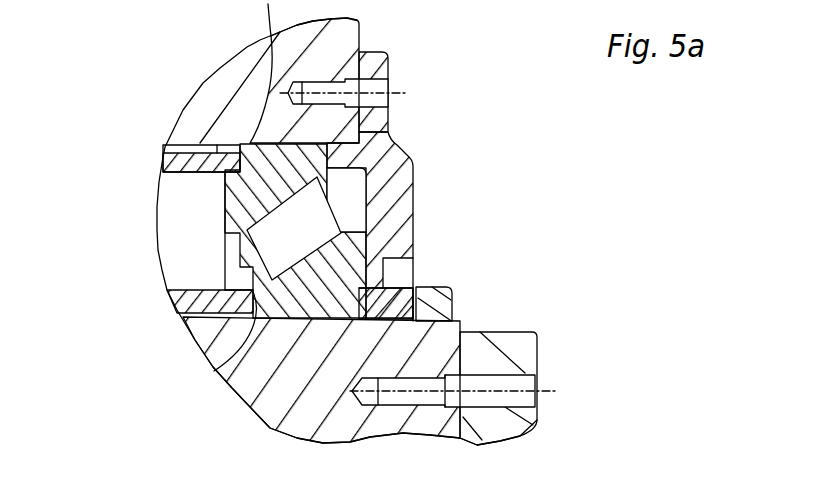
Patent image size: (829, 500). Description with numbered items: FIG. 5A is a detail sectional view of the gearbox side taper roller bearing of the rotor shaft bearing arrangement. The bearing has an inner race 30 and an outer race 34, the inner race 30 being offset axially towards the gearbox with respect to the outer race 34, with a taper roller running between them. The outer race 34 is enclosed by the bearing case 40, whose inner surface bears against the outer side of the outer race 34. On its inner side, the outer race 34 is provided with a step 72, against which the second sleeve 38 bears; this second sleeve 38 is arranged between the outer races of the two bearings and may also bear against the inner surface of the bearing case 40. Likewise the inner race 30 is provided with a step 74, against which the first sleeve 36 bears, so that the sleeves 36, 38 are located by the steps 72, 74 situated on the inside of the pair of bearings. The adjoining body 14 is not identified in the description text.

The hub body 14 is at (309, 412).
The inner race 30 is at (240, 273).
The outer race 34 is at (232, 188).
The first sleeve 36 is at (180, 303).
The second sleeve 38 is at (167, 168).
The bearing case 40 is at (250, 77).
The step 72 is at (328, 71).
The step 74 is at (248, 362).